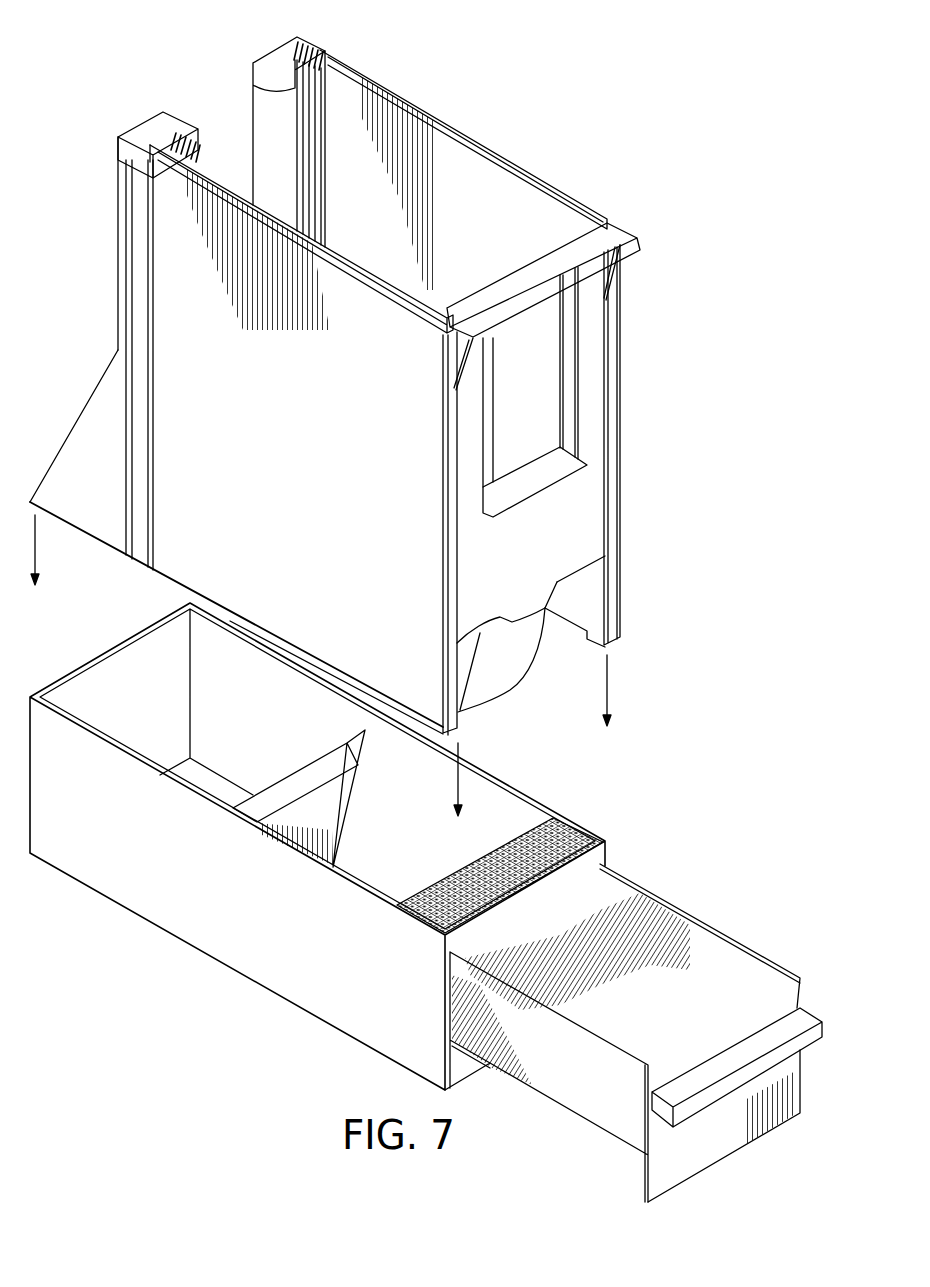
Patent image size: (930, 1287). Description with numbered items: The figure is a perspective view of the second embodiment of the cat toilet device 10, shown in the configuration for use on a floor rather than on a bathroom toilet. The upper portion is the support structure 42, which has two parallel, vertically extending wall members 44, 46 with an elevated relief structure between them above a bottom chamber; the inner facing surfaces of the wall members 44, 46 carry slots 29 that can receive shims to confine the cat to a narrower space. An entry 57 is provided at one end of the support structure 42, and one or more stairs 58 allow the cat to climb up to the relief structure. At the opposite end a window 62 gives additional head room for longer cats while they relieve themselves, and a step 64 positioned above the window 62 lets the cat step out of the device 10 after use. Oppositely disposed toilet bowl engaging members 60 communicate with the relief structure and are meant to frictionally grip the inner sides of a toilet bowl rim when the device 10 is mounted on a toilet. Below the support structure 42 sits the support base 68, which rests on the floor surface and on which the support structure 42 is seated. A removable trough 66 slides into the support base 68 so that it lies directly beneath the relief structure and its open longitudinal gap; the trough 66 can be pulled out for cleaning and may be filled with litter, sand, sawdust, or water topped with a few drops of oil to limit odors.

The cat toilet device 10 is at (88, 262).
The slots 29 is at (293, 90).
The support structure 42 is at (112, 163).
The wall member 44 is at (467, 128).
The wall member 46 is at (355, 280).
The entry 57 is at (242, 168).
The stairs 58 is at (85, 405).
The toilet bowl engaging members 60 is at (527, 690).
The window 62 is at (563, 403).
The step 64 is at (553, 247).
The removable trough 66 is at (684, 900).
The support base 68 is at (92, 890).